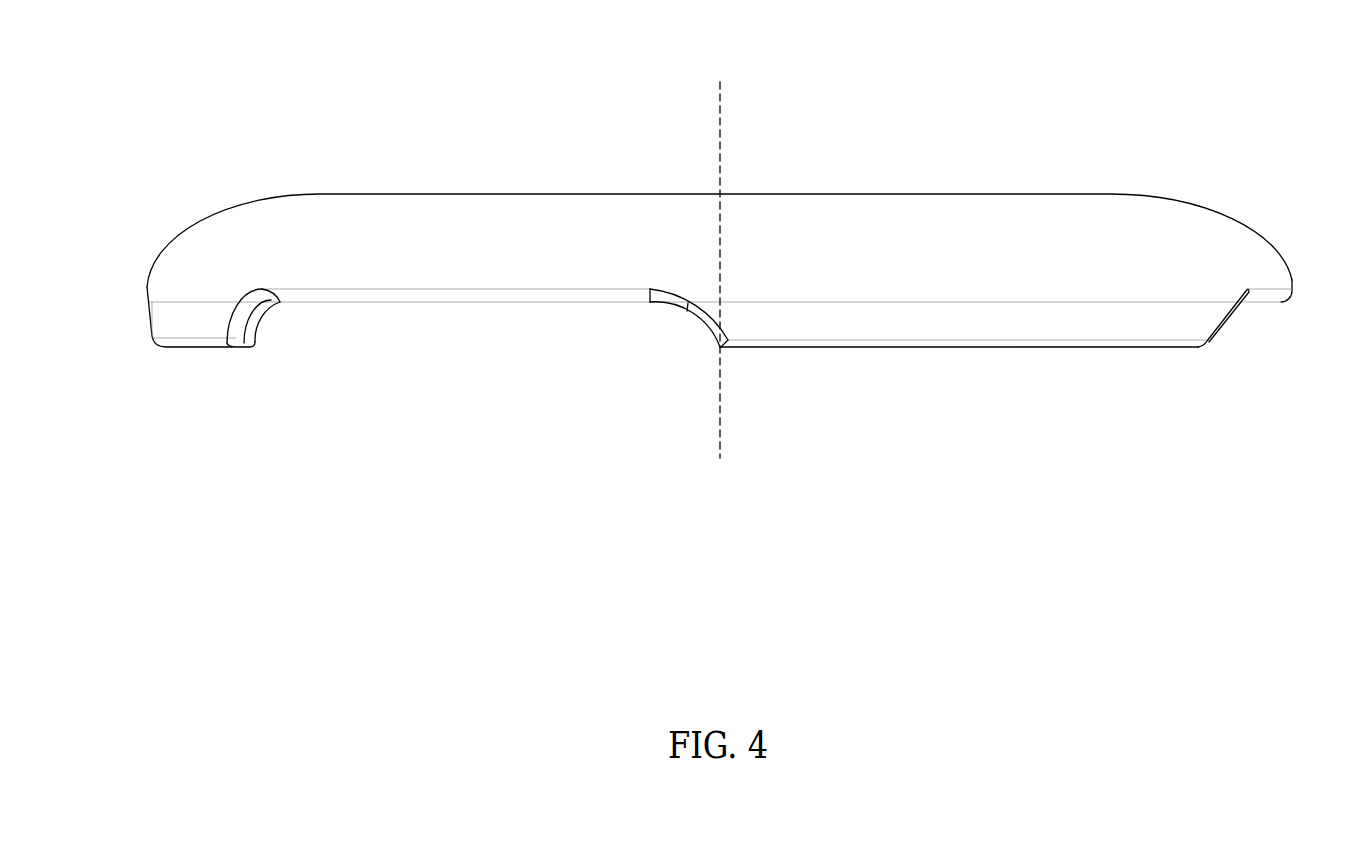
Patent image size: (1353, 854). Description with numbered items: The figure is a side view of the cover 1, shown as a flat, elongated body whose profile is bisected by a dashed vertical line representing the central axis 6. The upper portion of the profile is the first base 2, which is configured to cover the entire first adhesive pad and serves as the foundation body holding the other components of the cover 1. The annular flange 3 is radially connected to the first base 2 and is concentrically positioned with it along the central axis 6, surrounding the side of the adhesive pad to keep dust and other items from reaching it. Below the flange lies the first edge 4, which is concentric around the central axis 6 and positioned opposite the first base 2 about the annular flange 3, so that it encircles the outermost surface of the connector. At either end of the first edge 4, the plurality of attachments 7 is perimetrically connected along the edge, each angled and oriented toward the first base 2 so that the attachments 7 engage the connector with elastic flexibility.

The cover 1 is at (718, 246).
The first base 2 is at (455, 194).
The annular flange 3 is at (1267, 269).
The first edge 4 is at (473, 302).
The central axis 6 is at (718, 113).
The attachments 7 is at (162, 322).